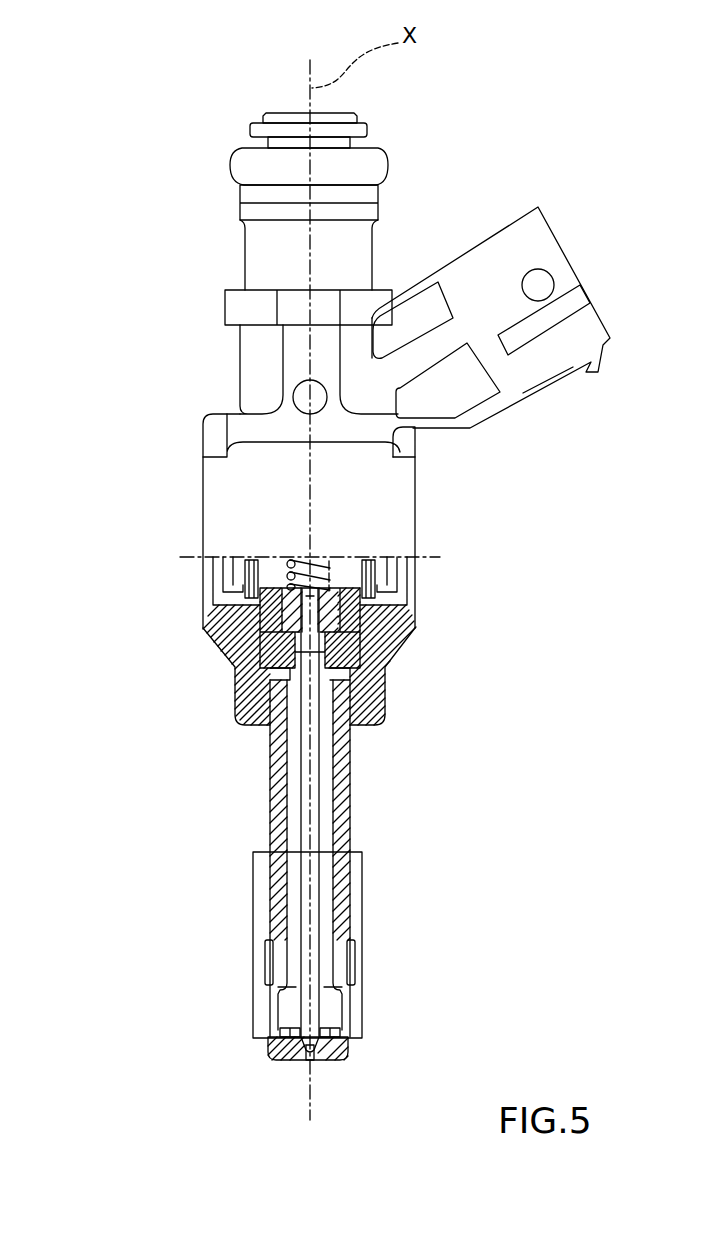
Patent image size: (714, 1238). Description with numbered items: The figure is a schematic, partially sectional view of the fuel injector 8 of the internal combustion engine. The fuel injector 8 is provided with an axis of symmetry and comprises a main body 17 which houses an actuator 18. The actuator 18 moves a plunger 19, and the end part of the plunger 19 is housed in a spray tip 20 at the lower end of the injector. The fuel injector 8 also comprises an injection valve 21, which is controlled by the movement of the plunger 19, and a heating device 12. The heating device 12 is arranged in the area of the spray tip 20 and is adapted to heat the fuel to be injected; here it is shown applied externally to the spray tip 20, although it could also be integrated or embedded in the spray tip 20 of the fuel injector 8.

The fuel injector 8 is at (150, 269).
The heating device 12 is at (357, 975).
The main body 17 is at (175, 469).
The actuator 18 is at (258, 619).
The plunger 19 is at (313, 1022).
The spray tip 20 is at (270, 800).
The injection valve 21 is at (269, 1046).